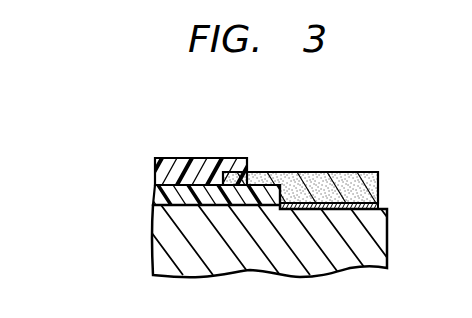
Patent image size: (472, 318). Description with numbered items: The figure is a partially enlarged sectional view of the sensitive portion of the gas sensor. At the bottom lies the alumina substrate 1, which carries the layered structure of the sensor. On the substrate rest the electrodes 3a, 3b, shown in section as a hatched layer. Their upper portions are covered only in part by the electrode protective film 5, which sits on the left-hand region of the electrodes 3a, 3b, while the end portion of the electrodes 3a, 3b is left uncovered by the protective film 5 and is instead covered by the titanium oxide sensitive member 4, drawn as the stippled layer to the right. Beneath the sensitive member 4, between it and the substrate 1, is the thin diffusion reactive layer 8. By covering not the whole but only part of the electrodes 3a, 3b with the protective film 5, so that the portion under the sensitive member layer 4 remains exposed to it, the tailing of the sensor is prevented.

The alumina substrate 1 is at (272, 266).
The electrode 3a is at (166, 195).
The electrode 3b is at (158, 197).
The titanium oxide sensitive member 4 is at (340, 176).
The electrode protective film 5 is at (198, 160).
The diffusion reactive layer 8 is at (366, 210).